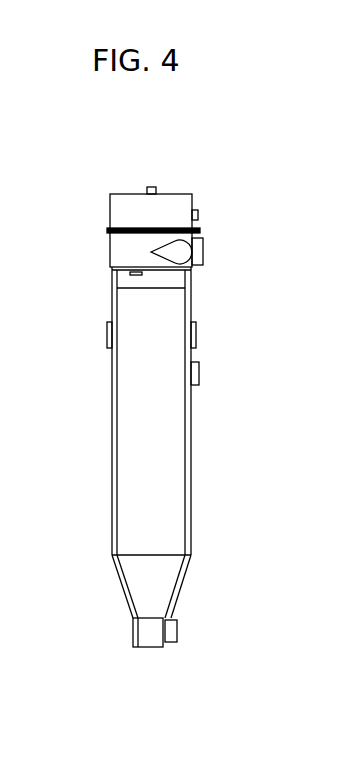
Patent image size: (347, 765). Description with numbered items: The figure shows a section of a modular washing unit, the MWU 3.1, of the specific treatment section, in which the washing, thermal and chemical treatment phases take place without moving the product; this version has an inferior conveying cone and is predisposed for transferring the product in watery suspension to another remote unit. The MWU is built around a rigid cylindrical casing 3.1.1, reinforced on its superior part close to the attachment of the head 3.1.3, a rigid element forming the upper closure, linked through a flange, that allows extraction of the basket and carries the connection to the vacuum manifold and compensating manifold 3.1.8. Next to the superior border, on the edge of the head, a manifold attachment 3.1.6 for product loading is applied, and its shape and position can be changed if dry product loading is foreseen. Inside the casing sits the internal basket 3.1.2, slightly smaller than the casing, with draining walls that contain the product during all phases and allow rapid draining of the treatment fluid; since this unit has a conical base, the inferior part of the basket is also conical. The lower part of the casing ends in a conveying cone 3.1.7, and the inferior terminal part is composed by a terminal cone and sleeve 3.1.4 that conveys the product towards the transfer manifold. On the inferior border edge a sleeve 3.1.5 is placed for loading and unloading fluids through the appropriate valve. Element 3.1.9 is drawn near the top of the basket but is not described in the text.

The modular washing unit (MWU) 3.1 is at (148, 462).
The casing 3.1.1 is at (192, 315).
The internal basket 3.1.2 is at (112, 372).
The head 3.1.3 is at (130, 192).
The terminal cone and sleeve 3.1.4 is at (148, 638).
The sleeve 3.1.5 is at (177, 627).
The manifold attachment for product loading 3.1.6 is at (203, 252).
The conveying cone 3.1.7 is at (162, 578).
The connection to the vacuum manifold 3.1.8 is at (155, 187).
The distributor element 3.1.9 is at (110, 273).